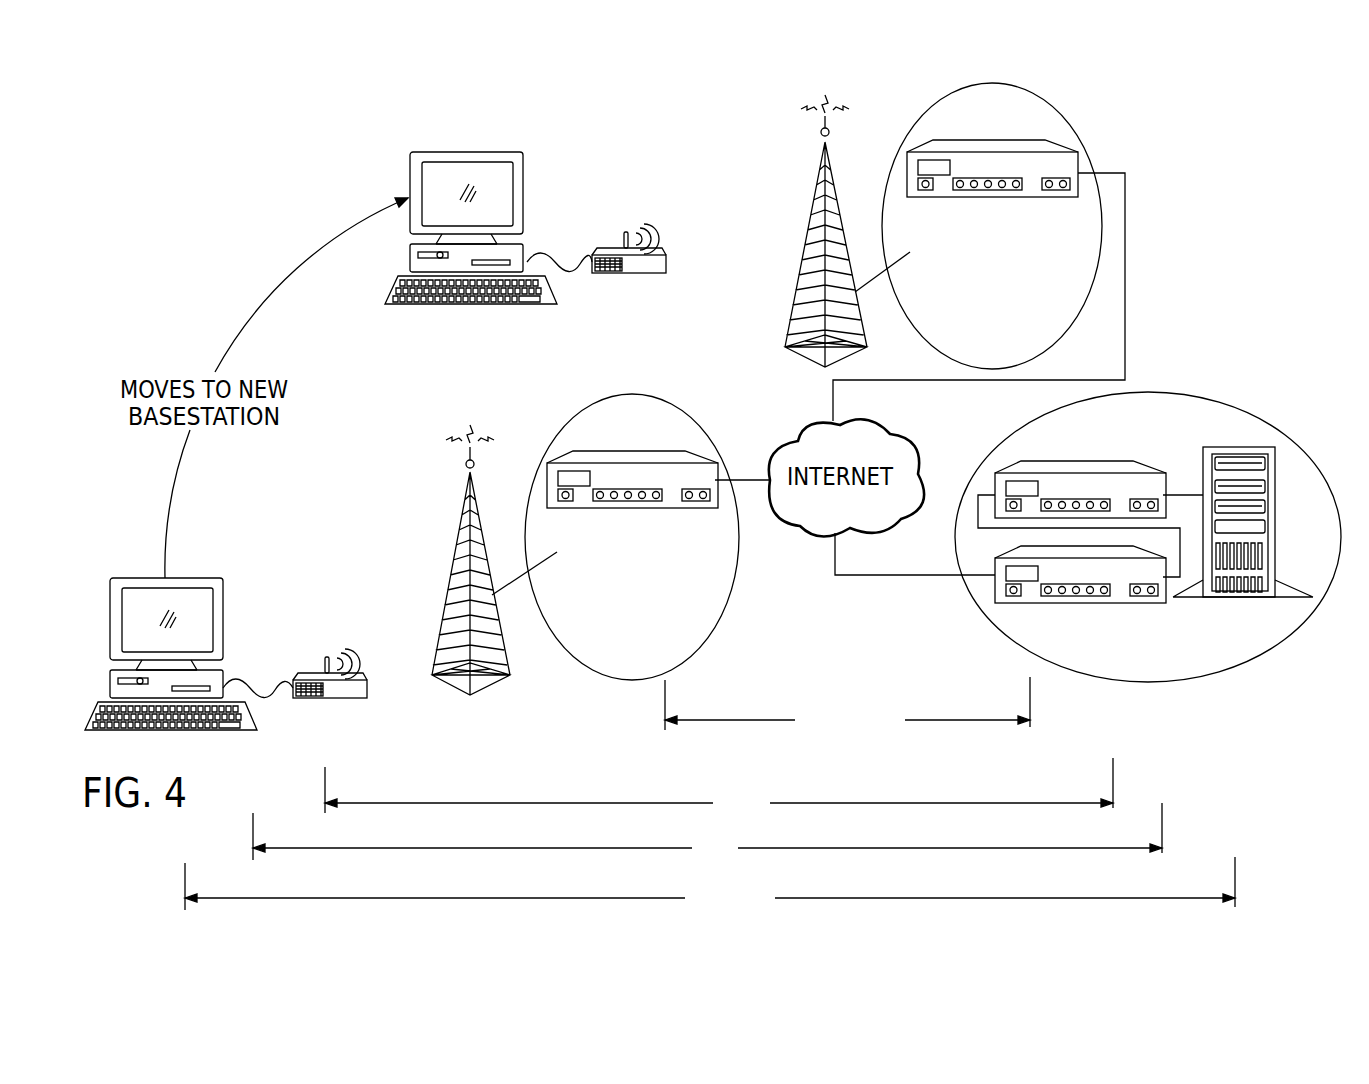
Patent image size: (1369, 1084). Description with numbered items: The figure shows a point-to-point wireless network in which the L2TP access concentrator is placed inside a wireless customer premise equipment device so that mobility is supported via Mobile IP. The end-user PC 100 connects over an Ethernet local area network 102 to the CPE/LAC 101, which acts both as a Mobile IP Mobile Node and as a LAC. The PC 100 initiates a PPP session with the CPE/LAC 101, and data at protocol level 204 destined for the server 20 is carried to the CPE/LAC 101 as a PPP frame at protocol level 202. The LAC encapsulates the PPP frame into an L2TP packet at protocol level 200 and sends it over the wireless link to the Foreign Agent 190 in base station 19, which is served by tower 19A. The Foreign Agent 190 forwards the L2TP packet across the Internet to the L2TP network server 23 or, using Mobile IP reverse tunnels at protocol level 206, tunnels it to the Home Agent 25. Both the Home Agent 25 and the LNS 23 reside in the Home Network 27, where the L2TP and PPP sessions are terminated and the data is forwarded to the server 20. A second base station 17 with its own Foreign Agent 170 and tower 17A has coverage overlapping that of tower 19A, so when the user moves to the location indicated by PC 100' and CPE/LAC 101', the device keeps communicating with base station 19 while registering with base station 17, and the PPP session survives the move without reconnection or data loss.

The PC 100 is at (158, 672).
The PC at new location 100' is at (481, 242).
The CPE/LAC device 101 is at (334, 693).
The CPE/LAC device at new location 101' is at (632, 264).
The Ethernet local area network 102 is at (262, 681).
The tower 17A is at (815, 190).
The Foreign Agent 170 is at (945, 199).
The base station 17 is at (1007, 321).
The tower 19A is at (460, 524).
The Foreign Agent 190 is at (585, 509).
The base station 19 is at (647, 651).
The L2TP network server 23 is at (1120, 462).
The server 20 is at (1276, 505).
The Mobile IP Home Agent 25 is at (1017, 553).
The Home Network 27 is at (1170, 671).
The L2TP protocol level 200 is at (446, 803).
The PPP protocol level 202 is at (402, 848).
The IP data protocol level 204 is at (357, 898).
The Mobile IP protocol level 206 is at (734, 720).